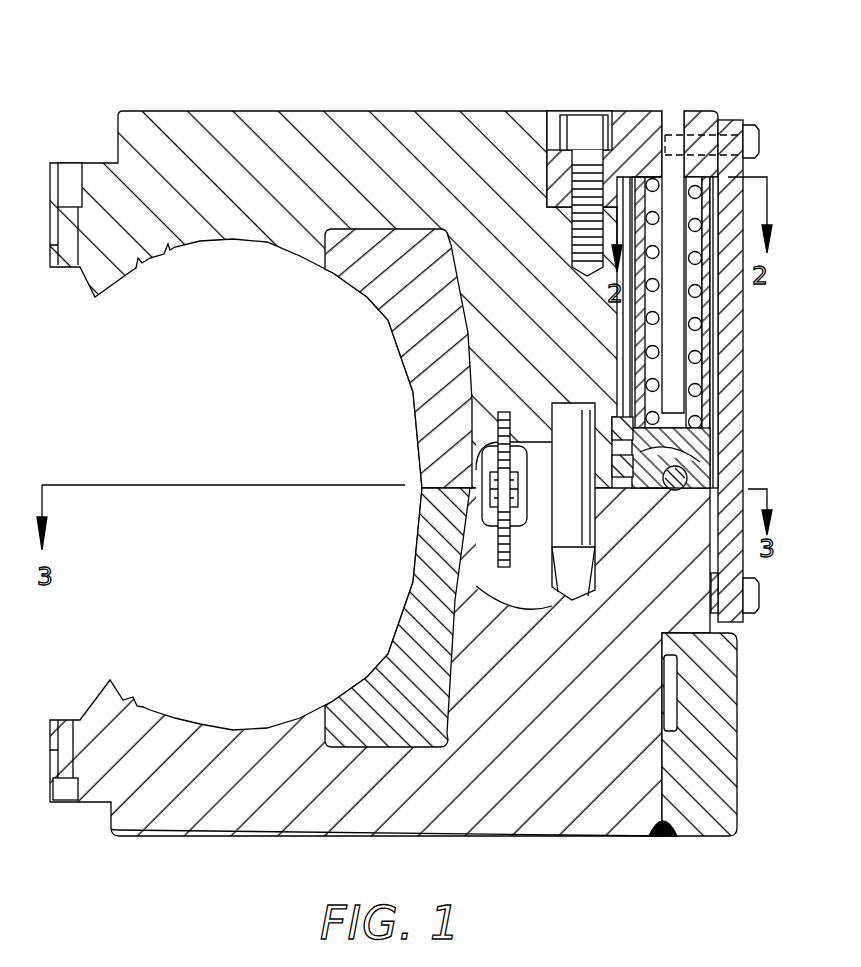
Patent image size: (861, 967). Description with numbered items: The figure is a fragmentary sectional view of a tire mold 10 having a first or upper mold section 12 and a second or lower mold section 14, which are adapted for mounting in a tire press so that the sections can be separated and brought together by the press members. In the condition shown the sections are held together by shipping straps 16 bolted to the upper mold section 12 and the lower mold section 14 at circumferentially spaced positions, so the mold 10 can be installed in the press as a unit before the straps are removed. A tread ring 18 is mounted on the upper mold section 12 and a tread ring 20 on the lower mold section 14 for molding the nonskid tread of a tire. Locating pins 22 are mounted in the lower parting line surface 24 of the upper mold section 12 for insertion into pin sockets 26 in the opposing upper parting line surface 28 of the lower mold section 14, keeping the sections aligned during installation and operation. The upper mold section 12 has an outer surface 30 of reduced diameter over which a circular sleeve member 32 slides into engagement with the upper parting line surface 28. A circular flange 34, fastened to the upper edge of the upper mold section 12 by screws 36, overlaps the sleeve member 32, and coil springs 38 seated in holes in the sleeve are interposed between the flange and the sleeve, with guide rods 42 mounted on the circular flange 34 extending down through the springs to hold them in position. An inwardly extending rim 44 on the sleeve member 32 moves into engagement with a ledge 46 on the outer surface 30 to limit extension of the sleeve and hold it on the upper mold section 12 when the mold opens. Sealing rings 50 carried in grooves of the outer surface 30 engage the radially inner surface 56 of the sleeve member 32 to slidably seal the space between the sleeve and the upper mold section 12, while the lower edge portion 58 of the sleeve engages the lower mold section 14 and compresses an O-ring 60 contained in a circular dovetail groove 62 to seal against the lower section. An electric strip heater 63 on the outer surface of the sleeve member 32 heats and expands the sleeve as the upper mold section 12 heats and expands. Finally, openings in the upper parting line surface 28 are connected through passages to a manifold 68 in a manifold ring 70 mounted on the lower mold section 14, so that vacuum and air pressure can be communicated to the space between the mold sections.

The tire mold 10 is at (422, 72).
The upper mold section 12 is at (452, 110).
The lower mold section 14 is at (497, 829).
The shipping straps 16 is at (730, 125).
The tread ring 18 is at (360, 268).
The tread ring 20 is at (362, 690).
The locating pins 22 is at (550, 403).
The lower parting line surface 24 is at (470, 576).
The pin sockets 26 is at (517, 610).
The upper parting line surface 28 is at (690, 478).
The outer surface 30 is at (712, 440).
The circular sleeve member 32 is at (705, 327).
The circular flange 34 is at (624, 120).
The screws 36 is at (575, 130).
The coil springs 38 is at (698, 312).
The guide rods 42 is at (675, 130).
The inwardly extending rim 44 is at (638, 195).
The ledge 46 is at (630, 410).
The sealing rings 50 is at (620, 425).
The radially inner surface 56 is at (600, 500).
The lower edge portion 58 is at (652, 492).
The O-ring 60 is at (672, 492).
The circular dovetail groove 62 is at (660, 458).
The electric strip heater 63 is at (716, 357).
The manifold 68 is at (672, 713).
The manifold ring 70 is at (683, 838).